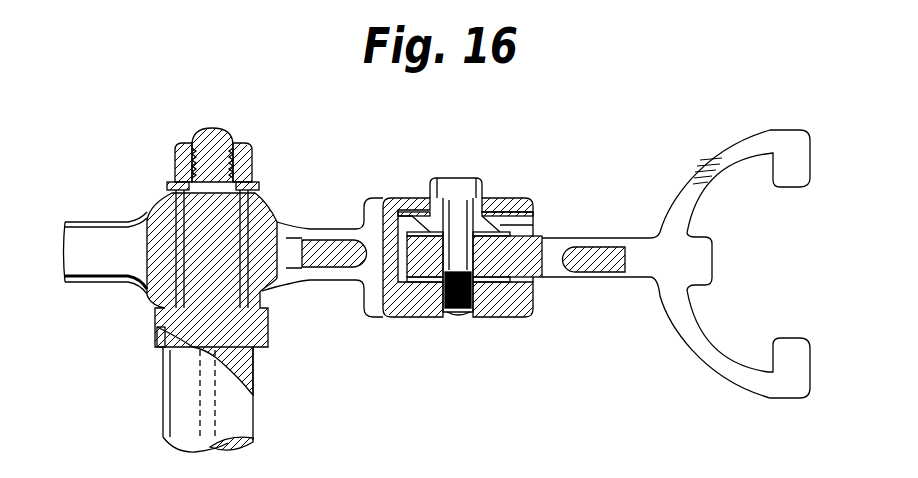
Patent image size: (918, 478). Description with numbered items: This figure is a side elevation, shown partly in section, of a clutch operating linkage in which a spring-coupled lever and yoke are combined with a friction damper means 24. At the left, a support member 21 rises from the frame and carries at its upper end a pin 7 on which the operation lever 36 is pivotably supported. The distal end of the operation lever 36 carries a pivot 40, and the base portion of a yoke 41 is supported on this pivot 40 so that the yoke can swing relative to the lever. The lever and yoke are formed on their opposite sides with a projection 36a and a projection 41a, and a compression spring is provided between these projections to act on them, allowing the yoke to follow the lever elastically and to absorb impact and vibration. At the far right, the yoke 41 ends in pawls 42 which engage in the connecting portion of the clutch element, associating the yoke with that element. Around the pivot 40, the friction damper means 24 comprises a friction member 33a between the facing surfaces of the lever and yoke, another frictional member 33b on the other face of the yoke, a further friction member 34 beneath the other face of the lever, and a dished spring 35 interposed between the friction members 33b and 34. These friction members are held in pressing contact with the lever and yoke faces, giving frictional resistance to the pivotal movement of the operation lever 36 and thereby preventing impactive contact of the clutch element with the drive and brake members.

The pin 7 is at (220, 255).
The support member 21 is at (166, 400).
The operation lever 36 is at (96, 268).
The projection 36a is at (331, 268).
The friction member 33a is at (491, 293).
The frictional member 33b is at (368, 215).
The dished spring 35 is at (423, 214).
The pivot 40 is at (460, 184).
The friction member 34 is at (495, 205).
The friction damper means 24 is at (521, 233).
The projection 41a is at (600, 266).
The yoke 41 is at (682, 190).
The pawls 42 is at (793, 184).